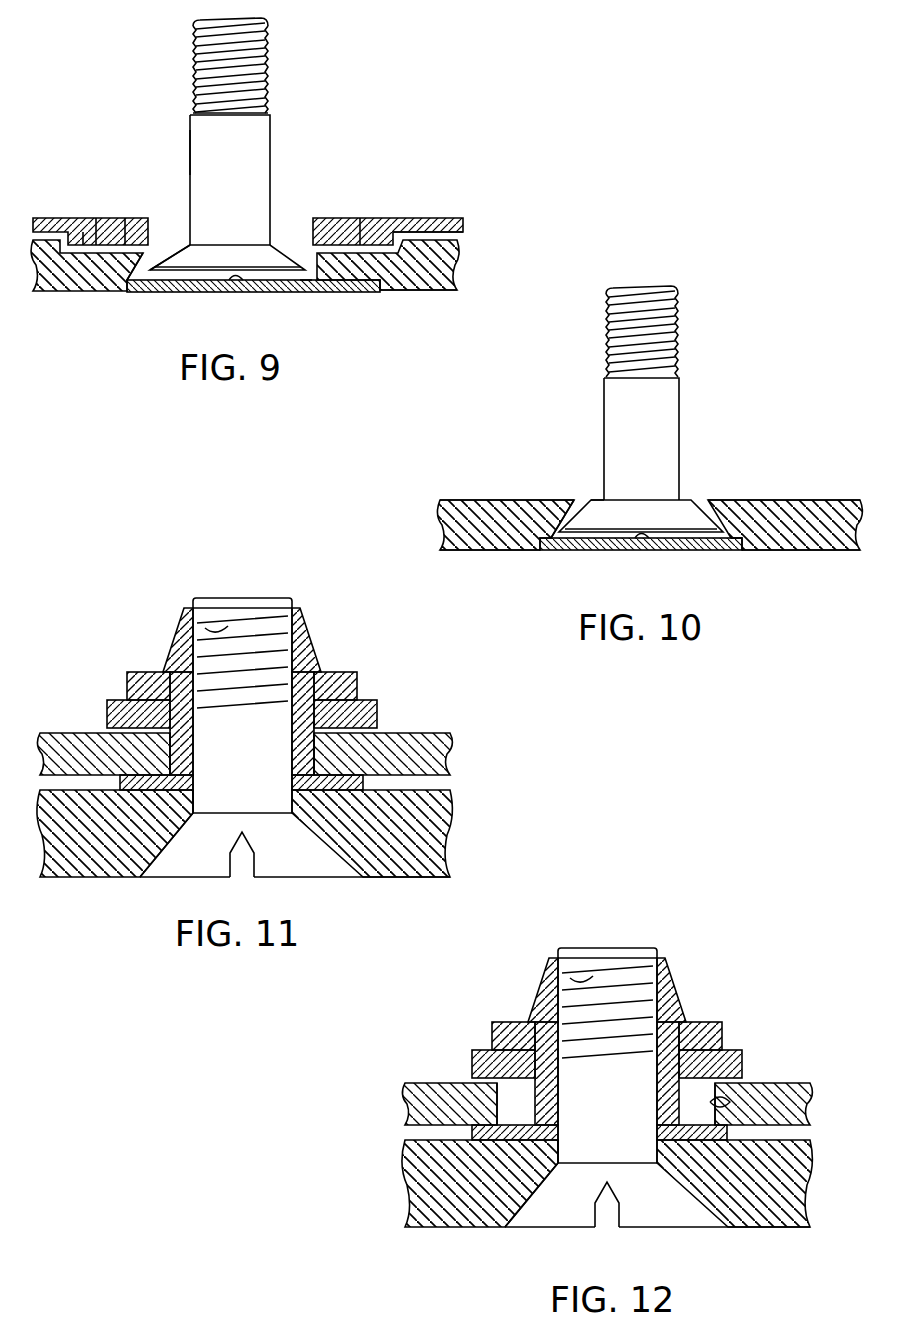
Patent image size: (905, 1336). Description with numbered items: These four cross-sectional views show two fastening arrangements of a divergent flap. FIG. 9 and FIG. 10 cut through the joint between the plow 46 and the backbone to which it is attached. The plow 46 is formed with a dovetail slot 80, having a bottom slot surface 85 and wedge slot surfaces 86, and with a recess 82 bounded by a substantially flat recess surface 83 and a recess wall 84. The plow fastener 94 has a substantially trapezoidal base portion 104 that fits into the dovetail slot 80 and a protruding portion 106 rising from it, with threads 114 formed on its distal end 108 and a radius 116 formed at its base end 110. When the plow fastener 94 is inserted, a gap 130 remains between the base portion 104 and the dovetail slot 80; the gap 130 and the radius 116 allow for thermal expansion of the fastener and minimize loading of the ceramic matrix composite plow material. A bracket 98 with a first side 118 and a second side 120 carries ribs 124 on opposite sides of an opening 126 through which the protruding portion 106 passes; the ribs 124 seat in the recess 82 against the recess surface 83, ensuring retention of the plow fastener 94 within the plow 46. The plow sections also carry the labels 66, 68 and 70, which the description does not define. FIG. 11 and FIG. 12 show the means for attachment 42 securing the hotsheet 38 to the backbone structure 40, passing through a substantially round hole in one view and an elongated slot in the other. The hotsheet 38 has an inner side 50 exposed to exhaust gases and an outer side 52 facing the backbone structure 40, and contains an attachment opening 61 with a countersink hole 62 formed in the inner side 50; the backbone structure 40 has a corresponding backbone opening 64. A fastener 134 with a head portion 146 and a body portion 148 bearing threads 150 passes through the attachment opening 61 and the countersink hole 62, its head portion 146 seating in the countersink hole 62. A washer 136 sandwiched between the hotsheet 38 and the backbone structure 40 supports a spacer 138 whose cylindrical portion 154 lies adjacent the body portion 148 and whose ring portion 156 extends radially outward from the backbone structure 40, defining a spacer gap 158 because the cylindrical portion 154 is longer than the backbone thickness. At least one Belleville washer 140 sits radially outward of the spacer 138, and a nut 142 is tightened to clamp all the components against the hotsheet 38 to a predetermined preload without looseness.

In FIG. 11, the hotsheet 38 is at (282, 859).
In FIG. 12, the hotsheet 38 is at (641, 1211).
In FIG. 11, the backbone structure 40 is at (452, 750).
In FIG. 12, the backbone structure 40 is at (637, 1097).
In FIG. 11, the means for attachment 42 is at (282, 783).
In FIG. 12, the means for attachment 42 is at (641, 1121).
In FIG. 9, the plow 46 is at (296, 295).
In FIG. 10, the plow 46 is at (612, 520).
In FIG. 11, the hotsheet inner side 50 is at (385, 880).
In FIG. 12, the hotsheet inner side 50 is at (769, 1254).
In FIG. 11, the hotsheet outer side 52 is at (368, 783).
In FIG. 12, the hotsheet outer side 52 is at (676, 1135).
In FIG. 11, the attachment opening 61 is at (197, 815).
In FIG. 12, the attachment opening 61 is at (562, 1175).
In FIG. 11, the countersink hole 62 is at (153, 878).
In FIG. 12, the countersink hole 62 is at (516, 1221).
In FIG. 11, the backbone opening 64 is at (338, 760).
In FIG. 12, the backbone opening 64 is at (745, 1104).
In FIG. 9, the panel 66 is at (458, 268).
In FIG. 10, the panel 66 is at (832, 508).
In FIG. 9, the lower surface of panel 68 is at (442, 295).
In FIG. 10, the lower surface of panel 68 is at (800, 552).
In FIG. 9, the upper surface of panel 70 is at (465, 222).
In FIG. 10, the upper surface of panel 70 is at (785, 497).
In FIG. 9, the dovetail slot 80 is at (165, 292).
In FIG. 10, the dovetail slot 80 is at (580, 550).
In FIG. 9, the recess 82 is at (365, 238).
In FIG. 9, the recess surface 83 is at (382, 291).
In FIG. 9, the recess wall 84 is at (400, 232).
In FIG. 9, the bottom slot surface 85 is at (240, 290).
In FIG. 10, the bottom slot surface 85 is at (643, 548).
In FIG. 9, the wedge slot surfaces 86 is at (303, 290).
In FIG. 10, the wedge slot surfaces 86 is at (738, 548).
In FIG. 9, the plow fastener 94 is at (247, 142).
In FIG. 10, the plow fastener 94 is at (665, 409).
In FIG. 9, the bracket 98 is at (266, 190).
In FIG. 9, the base portion 104 is at (237, 250).
In FIG. 10, the base portion 104 is at (632, 512).
In FIG. 9, the protruding portion 106 is at (190, 160).
In FIG. 9, the distal end 108 is at (195, 27).
In FIG. 10, the distal end 108 is at (608, 290).
In FIG. 9, the base end 110 is at (286, 250).
In FIG. 10, the base end 110 is at (688, 507).
In FIG. 9, the threads 114 is at (272, 45).
In FIG. 10, the threads 114 is at (680, 323).
In FIG. 9, the radius 116 is at (185, 250).
In FIG. 10, the radius 116 is at (615, 512).
In FIG. 9, the first side 118 is at (42, 215).
In FIG. 9, the second side 120 is at (50, 292).
In FIG. 9, the ribs 124 is at (105, 232).
In FIG. 9, the opening 126 is at (125, 238).
In FIG. 9, the gap 130 is at (122, 290).
In FIG. 10, the gap 130 is at (545, 540).
In FIG. 11, the fastener 134 is at (243, 705).
In FIG. 12, the fastener 134 is at (608, 1054).
In FIG. 11, the washer 136 is at (110, 835).
In FIG. 12, the washer 136 is at (480, 1183).
In FIG. 11, the spacer 138 is at (95, 712).
In FIG. 12, the spacer 138 is at (462, 1050).
In FIG. 11, the Belleville washer 140 is at (122, 688).
In FIG. 12, the Belleville washer 140 is at (478, 1017).
In FIG. 11, the nut 142 is at (316, 650).
In FIG. 12, the nut 142 is at (628, 1051).
In FIG. 11, the head portion 146 is at (298, 870).
In FIG. 12, the head portion 146 is at (616, 1253).
In FIG. 11, the body portion 148 is at (247, 782).
In FIG. 12, the body portion 148 is at (613, 1183).
In FIG. 11, the threads 150 is at (200, 628).
In FIG. 12, the threads 150 is at (563, 1003).
In FIG. 11, the cylindrical portion 154 is at (170, 746).
In FIG. 12, the cylindrical portion 154 is at (452, 1104).
In FIG. 11, the ring portion 156 is at (360, 698).
In FIG. 12, the ring portion 156 is at (727, 1029).
In FIG. 11, the spacer gap 158 is at (380, 735).
In FIG. 12, the spacer gap 158 is at (753, 1066).